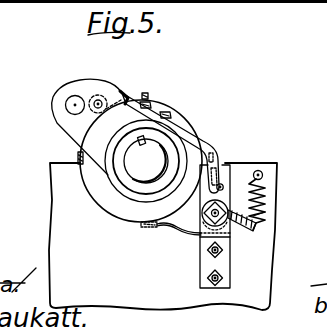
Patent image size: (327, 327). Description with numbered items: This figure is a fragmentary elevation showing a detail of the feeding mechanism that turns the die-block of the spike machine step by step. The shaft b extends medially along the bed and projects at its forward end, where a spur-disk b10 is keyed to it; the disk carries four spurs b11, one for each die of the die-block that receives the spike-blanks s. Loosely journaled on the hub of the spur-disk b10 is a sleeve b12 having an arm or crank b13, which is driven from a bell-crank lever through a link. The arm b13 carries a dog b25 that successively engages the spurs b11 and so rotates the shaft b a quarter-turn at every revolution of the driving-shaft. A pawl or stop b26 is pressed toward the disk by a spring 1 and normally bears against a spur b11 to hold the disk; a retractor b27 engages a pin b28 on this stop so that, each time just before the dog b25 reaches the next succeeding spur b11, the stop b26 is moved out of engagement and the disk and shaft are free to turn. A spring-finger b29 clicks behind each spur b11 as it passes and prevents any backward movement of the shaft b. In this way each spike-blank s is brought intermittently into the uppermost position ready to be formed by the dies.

The shaft b is at (135, 163).
The spur-disk b10 is at (175, 110).
The spurs b11 is at (186, 64).
The sleeve b12 is at (33, 182).
The arm or crank b13 is at (80, 82).
The dog b25 is at (111, 96).
The pawl or stop b26 is at (222, 183).
The retractor b27 is at (208, 140).
The pin b28 is at (227, 173).
The spring-finger b29 is at (165, 238).
The spike-blanks s is at (262, 208).
The spring end 1 is at (310, 193).